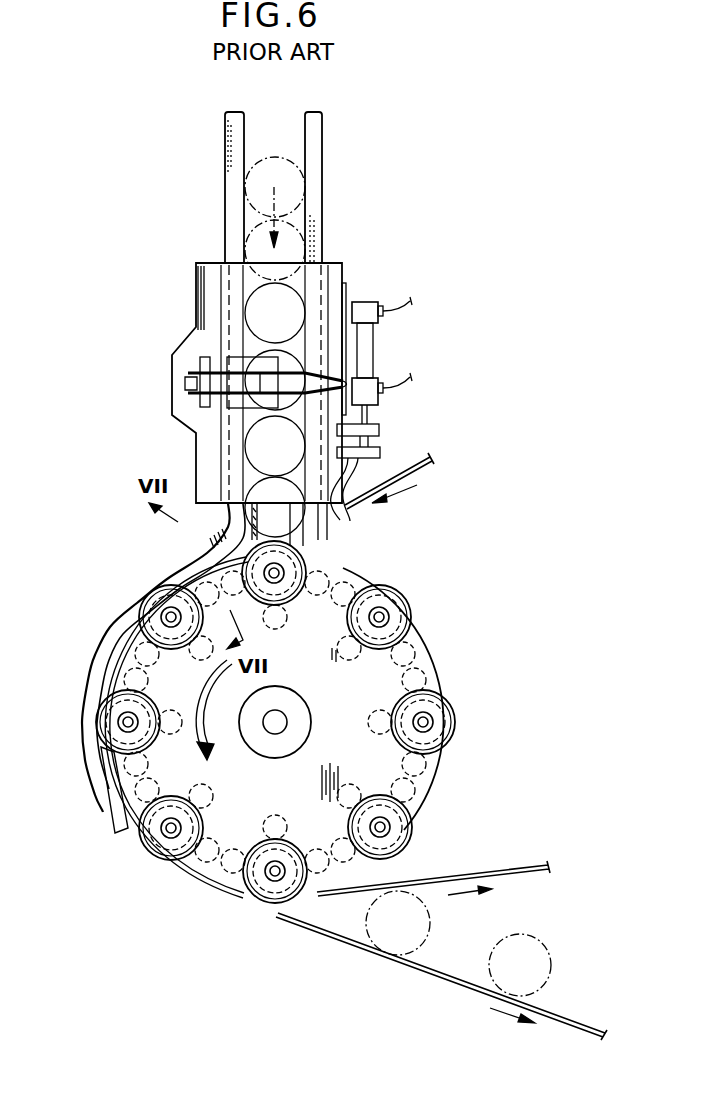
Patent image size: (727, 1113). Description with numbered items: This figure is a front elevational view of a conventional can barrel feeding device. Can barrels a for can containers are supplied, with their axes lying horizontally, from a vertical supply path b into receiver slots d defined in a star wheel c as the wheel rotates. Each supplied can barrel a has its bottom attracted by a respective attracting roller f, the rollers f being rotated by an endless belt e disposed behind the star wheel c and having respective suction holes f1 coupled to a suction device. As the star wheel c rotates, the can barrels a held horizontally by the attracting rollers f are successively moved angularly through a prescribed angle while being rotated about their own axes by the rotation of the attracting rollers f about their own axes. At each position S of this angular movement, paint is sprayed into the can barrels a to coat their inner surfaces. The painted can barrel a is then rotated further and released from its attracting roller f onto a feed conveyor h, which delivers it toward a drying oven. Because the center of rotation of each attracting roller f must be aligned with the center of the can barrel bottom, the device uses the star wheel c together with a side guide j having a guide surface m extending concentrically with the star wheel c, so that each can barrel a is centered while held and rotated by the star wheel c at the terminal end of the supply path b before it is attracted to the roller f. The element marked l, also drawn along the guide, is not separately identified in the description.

The can barrel a is at (252, 237).
The vertical supply path b is at (330, 223).
The star wheel c is at (374, 679).
The receiver slot d is at (232, 612).
The endless belt e is at (416, 464).
The attracting roller f is at (148, 611).
The suction hole f1 is at (276, 588).
The feed conveyor h is at (386, 962).
The side guide j is at (165, 582).
The guide member l is at (170, 590).
The guide surface m is at (193, 567).
The position of angular movement S is at (122, 722).